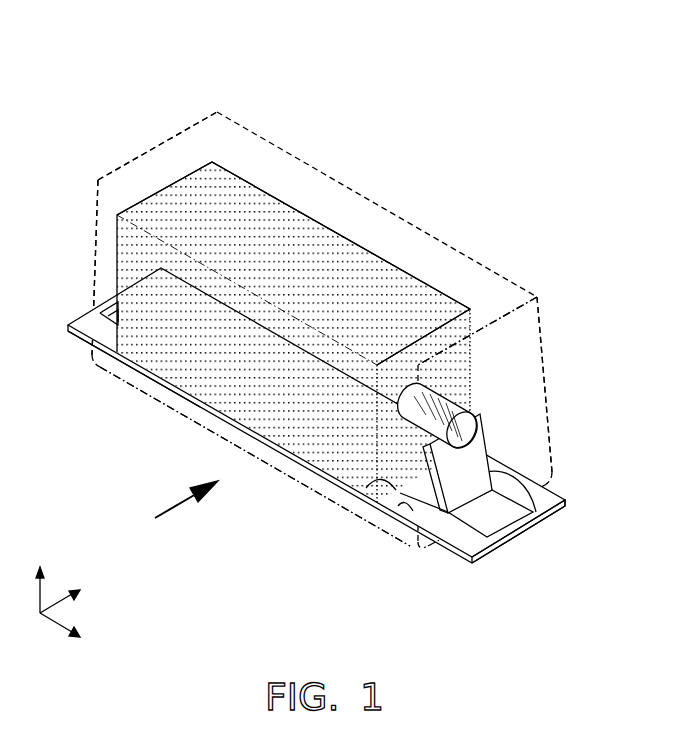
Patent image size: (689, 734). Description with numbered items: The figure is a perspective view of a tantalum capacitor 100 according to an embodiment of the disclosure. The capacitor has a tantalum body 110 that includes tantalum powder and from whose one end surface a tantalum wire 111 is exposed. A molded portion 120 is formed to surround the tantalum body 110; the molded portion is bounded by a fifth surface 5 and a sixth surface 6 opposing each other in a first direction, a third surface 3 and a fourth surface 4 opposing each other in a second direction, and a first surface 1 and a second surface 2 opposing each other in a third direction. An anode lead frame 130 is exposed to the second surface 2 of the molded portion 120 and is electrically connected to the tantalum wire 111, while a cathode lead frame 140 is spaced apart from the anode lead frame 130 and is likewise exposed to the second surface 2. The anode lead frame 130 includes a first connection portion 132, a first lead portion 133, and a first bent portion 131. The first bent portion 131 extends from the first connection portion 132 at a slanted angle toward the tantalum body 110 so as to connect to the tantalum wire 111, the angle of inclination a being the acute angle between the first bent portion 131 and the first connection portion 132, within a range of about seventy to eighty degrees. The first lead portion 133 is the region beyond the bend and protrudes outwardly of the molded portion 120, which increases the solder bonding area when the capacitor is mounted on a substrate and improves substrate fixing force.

The tantalum capacitor 100 is at (142, 51).
The first surface 1 is at (253, 163).
The second surface 2 is at (332, 490).
The third surface 3 is at (107, 255).
The fourth surface 4 is at (458, 285).
The fifth surface 5 is at (515, 375).
The sixth surface 6 is at (148, 178).
The tantalum body 110 is at (323, 247).
The tantalum wire 111 is at (465, 425).
The molded portion 120 is at (406, 221).
The anode lead frame 130 is at (452, 558).
The first bent portion 131 is at (550, 523).
The first connection portion 132 is at (390, 517).
The first lead portion 133 is at (473, 545).
The cathode lead frame 140 is at (119, 366).
The angle of inclination a is at (372, 492).